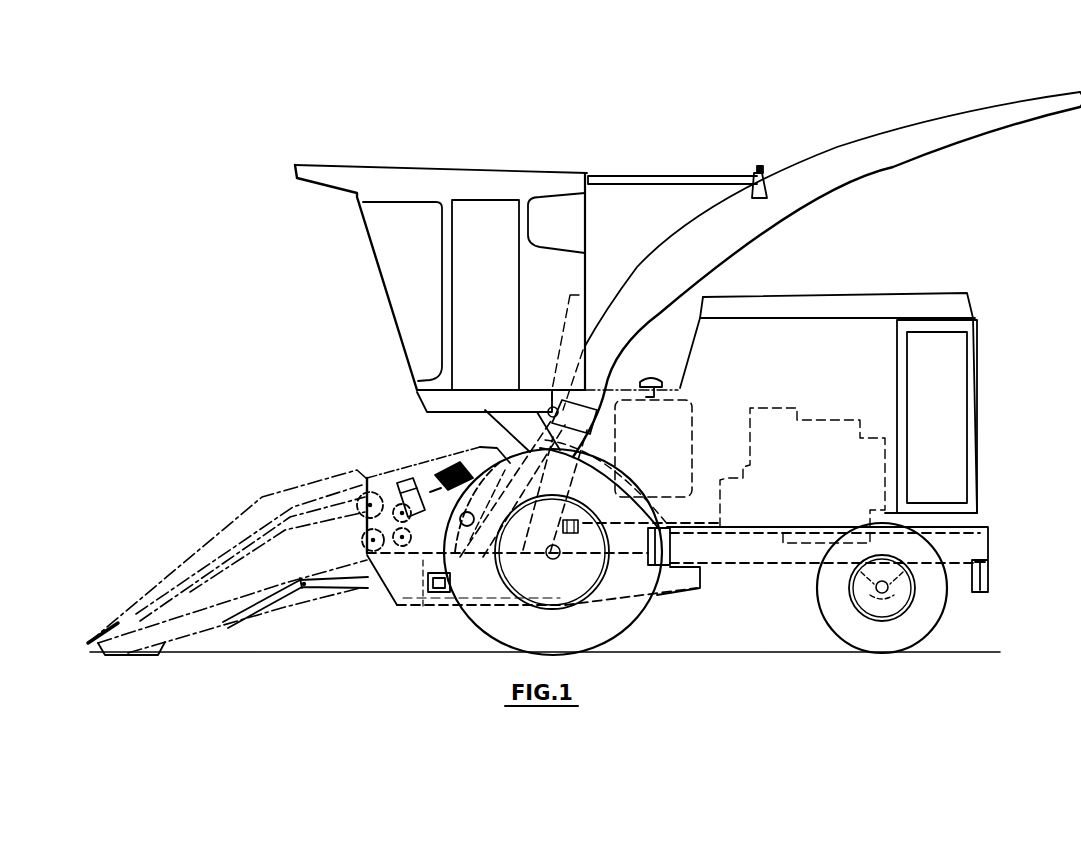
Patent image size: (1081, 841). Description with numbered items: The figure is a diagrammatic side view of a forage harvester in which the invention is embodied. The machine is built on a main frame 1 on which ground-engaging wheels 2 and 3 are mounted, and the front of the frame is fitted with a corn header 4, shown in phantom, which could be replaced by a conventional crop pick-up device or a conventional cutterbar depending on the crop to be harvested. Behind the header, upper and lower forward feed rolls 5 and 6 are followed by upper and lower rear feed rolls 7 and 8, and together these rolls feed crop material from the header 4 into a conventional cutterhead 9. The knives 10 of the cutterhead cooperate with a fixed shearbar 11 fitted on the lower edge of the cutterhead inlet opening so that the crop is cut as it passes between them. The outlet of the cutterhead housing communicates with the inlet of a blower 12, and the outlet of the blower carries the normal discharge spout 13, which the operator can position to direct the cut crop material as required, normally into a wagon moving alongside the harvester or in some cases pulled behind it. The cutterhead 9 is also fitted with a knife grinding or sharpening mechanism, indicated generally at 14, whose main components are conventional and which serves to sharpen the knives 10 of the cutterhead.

The main frame 1 is at (757, 567).
The ground-engaging wheel 2 is at (633, 617).
The ground-engaging wheel 3 is at (833, 615).
The corn header 4 is at (195, 547).
The upper forward feed roll 5 is at (357, 513).
The lower forward feed roll 6 is at (345, 548).
The upper rear feed roll 7 is at (397, 483).
The lower rear feed roll 8 is at (378, 587).
The cutterhead 9 is at (488, 482).
The knives 10 is at (453, 563).
The fixed shearbar 11 is at (380, 563).
The blower 12 is at (542, 555).
The discharge spout 13 is at (841, 168).
The knife grinding mechanism 14 is at (408, 458).